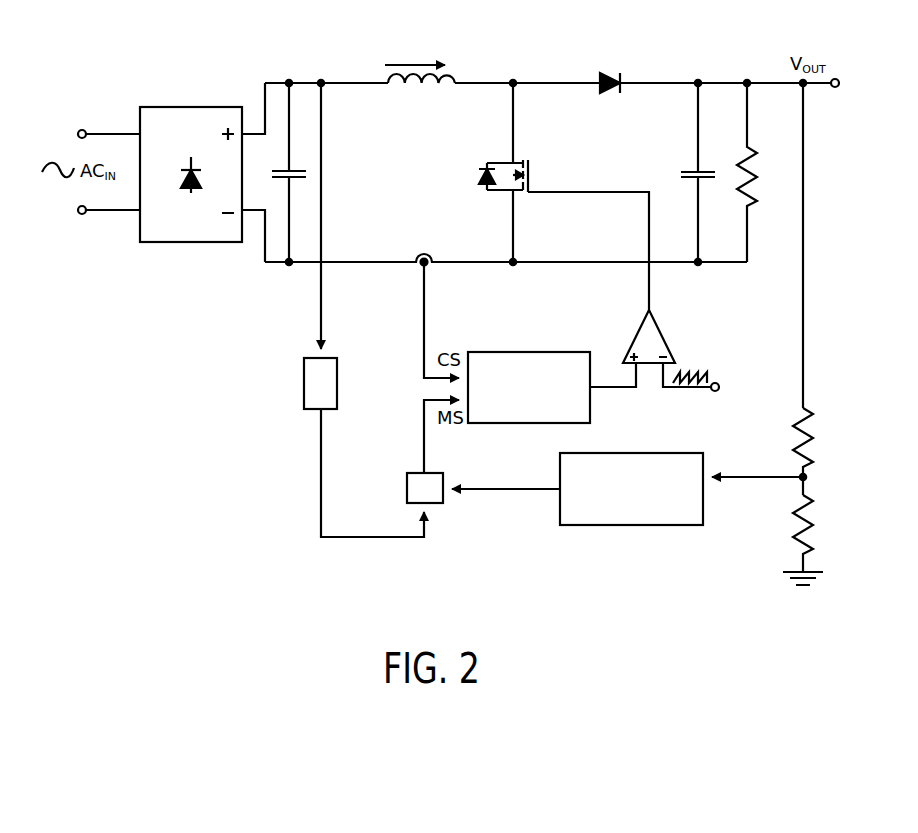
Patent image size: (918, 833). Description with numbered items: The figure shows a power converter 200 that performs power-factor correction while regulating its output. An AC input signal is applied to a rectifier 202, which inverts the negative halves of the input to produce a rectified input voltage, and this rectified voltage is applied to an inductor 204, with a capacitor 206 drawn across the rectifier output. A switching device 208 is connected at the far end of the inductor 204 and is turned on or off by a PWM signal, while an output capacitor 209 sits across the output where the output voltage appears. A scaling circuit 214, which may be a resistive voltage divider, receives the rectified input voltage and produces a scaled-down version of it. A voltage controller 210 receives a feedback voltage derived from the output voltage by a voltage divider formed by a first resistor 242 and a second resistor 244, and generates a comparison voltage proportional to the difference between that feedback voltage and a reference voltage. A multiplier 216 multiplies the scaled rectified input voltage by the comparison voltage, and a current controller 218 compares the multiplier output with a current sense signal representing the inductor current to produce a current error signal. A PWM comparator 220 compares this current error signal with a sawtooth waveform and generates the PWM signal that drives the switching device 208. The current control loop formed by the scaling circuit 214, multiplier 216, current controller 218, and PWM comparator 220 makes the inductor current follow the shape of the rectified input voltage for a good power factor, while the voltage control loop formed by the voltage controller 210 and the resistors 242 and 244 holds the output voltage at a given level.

The power converter 200 is at (110, 75).
The rectifier 202 is at (190, 107).
The inductor 204 is at (425, 84).
The input capacitor 206 is at (306, 172).
The switching device 208 is at (482, 192).
The output capacitor 209 is at (689, 170).
The voltage controller 210 is at (624, 526).
The scaling circuit 214 is at (304, 378).
The multiplier 216 is at (438, 504).
The current controller 218 is at (517, 351).
The pulse-width modulation (PWM) comparator 220 is at (668, 342).
The first resistor 242 is at (810, 415).
The second resistor 244 is at (815, 505).